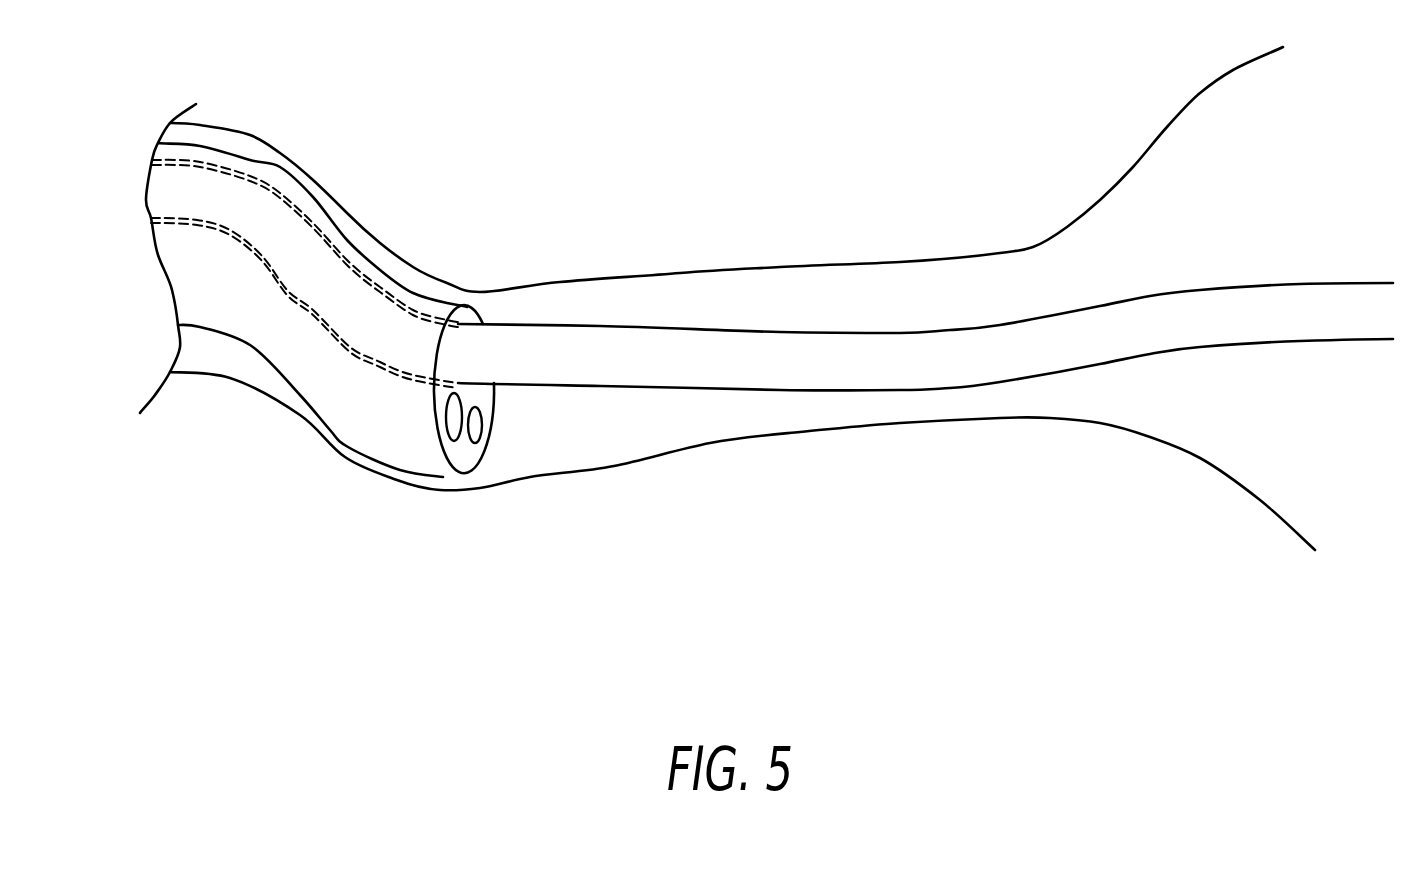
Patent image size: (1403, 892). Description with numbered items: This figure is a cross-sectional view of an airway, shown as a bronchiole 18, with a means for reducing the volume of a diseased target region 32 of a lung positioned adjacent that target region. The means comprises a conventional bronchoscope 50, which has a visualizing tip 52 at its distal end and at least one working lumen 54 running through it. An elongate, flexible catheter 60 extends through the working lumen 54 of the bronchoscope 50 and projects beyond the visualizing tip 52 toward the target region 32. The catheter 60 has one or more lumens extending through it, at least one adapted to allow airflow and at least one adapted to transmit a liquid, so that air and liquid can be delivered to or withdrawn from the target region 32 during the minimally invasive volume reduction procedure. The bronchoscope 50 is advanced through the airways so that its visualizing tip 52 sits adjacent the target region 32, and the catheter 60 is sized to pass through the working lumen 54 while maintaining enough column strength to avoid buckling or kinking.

The bronchioles 18 is at (615, 467).
The target region 32 is at (1207, 88).
The bronchoscope 50 is at (343, 458).
The visualizing tip 52 is at (473, 432).
The working lumen 54 is at (478, 320).
The catheter 60 is at (568, 323).